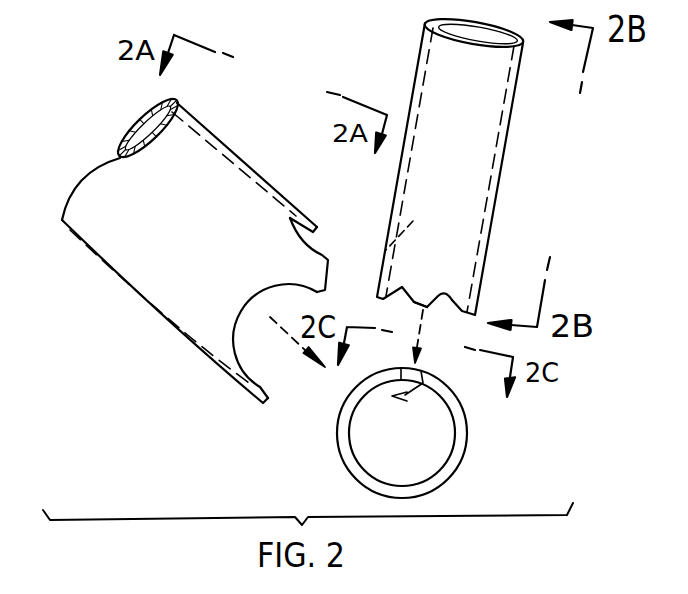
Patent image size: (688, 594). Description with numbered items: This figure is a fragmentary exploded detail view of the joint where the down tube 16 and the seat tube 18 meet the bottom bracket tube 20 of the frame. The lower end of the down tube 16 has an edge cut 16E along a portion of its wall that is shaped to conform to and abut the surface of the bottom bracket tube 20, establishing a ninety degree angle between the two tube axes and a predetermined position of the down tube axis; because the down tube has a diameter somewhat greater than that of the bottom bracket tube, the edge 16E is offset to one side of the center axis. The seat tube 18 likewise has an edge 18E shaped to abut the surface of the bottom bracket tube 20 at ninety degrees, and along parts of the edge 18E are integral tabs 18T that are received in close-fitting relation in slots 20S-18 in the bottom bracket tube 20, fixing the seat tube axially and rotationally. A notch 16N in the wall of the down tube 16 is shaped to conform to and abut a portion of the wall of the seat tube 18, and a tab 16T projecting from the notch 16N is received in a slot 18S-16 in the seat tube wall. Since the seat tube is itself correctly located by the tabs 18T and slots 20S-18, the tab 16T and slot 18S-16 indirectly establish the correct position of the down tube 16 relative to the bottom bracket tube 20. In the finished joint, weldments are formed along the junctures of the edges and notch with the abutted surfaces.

The down tube 16 is at (153, 310).
The tab 16T is at (305, 215).
The notch 16N is at (322, 257).
The edge cut 16E is at (262, 386).
The seat tube 18 is at (500, 173).
The slot 18S-16 is at (434, 224).
The tab 18T is at (427, 297).
The edge 18E is at (442, 308).
The bottom bracket tube 20 is at (457, 468).
The slot 20S-18 is at (410, 403).